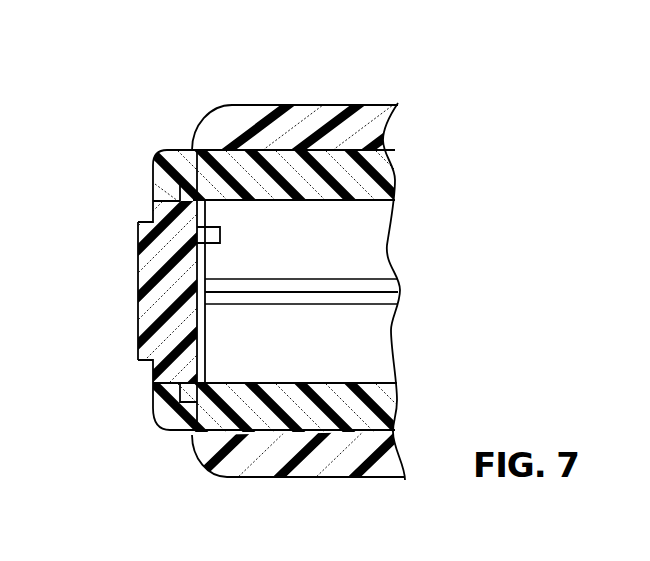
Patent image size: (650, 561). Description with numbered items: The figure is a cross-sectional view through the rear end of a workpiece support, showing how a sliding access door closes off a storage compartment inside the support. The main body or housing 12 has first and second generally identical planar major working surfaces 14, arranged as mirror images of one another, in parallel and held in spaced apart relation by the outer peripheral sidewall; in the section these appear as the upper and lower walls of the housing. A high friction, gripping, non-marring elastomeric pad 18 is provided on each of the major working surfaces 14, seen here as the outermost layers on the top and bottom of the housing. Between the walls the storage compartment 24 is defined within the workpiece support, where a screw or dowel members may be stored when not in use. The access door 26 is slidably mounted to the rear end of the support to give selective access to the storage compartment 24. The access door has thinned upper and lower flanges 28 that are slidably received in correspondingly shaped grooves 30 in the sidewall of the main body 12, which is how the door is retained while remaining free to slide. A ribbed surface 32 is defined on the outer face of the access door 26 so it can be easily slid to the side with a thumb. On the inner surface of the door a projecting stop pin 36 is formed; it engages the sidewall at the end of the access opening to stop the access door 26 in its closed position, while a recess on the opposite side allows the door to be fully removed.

The main body or housing 12 is at (382, 178).
The major working surfaces 14 is at (183, 147).
The elastomeric pad 18 is at (322, 125).
The storage compartment 24 is at (365, 343).
The access door 26 is at (124, 301).
The upper and lower flanges 28 is at (157, 415).
The grooves 30 is at (153, 172).
The ribbed surface 32 is at (138, 250).
The projecting stop pin 36 is at (228, 240).